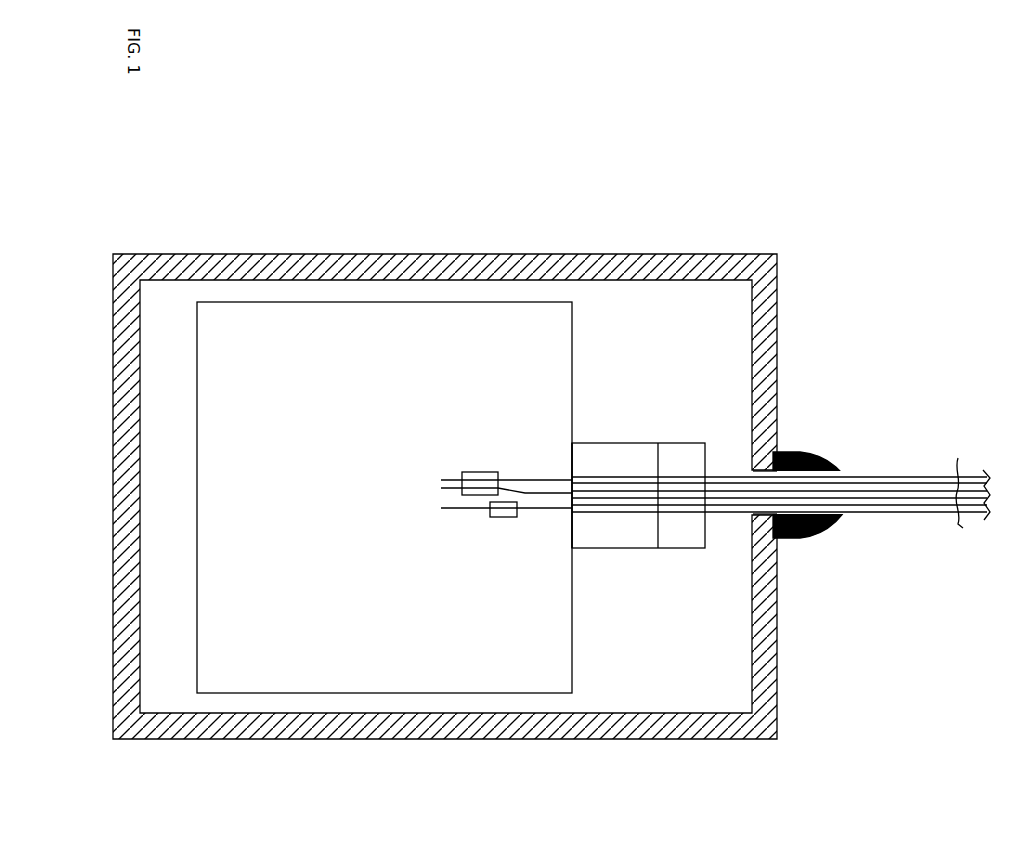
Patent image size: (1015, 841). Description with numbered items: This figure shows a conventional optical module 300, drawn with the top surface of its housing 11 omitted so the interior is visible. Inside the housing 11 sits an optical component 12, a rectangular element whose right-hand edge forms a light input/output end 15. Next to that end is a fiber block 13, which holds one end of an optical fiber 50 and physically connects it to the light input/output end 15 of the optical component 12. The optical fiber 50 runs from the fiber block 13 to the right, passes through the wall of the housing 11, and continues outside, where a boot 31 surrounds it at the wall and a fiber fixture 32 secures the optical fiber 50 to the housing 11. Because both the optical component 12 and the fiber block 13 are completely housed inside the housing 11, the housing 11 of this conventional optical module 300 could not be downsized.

The optical module 300 is at (682, 137).
The housing 11 is at (663, 253).
The optical component 12 is at (459, 302).
The fiber block 13 is at (640, 443).
The light input/output end 15 is at (572, 558).
The boot 31 is at (822, 455).
The fiber fixture 32 is at (756, 519).
The optical fiber 50 is at (958, 468).